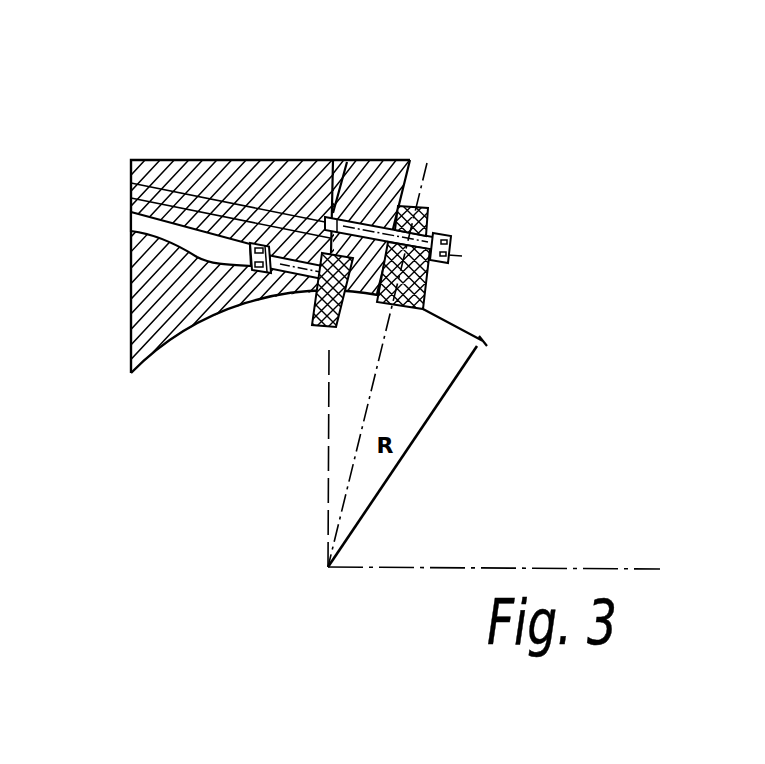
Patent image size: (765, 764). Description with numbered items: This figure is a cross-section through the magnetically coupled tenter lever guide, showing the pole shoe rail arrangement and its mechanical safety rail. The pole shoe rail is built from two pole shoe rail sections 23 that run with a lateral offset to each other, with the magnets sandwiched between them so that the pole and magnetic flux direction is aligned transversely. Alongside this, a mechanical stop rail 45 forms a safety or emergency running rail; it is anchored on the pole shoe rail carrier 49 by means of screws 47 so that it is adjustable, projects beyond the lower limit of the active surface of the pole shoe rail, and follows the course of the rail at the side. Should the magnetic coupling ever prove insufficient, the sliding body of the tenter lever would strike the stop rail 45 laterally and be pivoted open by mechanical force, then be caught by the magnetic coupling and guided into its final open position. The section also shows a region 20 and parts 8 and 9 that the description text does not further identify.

The pole shoe rail carrier 49 is at (287, 162).
The wedge segment 20 is at (347, 162).
The screws 47 is at (130, 229).
The mechanical stop rail 45 is at (312, 323).
The second bolt 8 is at (453, 234).
The upper nut 9 is at (437, 230).
The pole shoe rail sections 23 is at (374, 300).